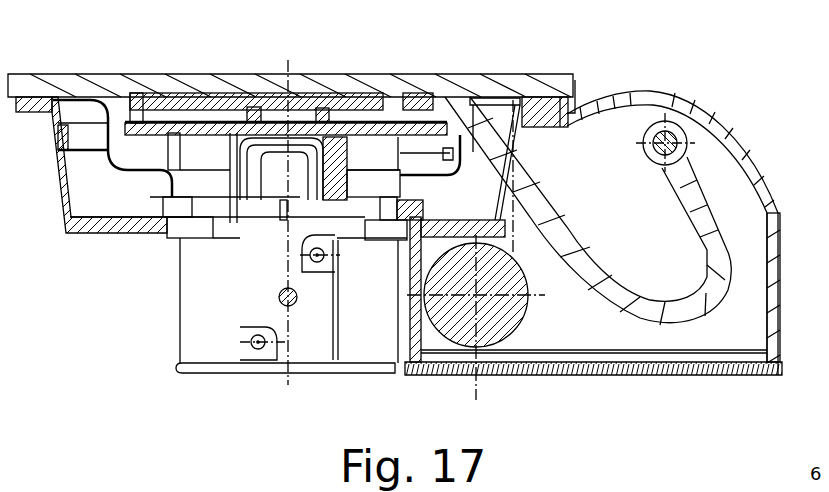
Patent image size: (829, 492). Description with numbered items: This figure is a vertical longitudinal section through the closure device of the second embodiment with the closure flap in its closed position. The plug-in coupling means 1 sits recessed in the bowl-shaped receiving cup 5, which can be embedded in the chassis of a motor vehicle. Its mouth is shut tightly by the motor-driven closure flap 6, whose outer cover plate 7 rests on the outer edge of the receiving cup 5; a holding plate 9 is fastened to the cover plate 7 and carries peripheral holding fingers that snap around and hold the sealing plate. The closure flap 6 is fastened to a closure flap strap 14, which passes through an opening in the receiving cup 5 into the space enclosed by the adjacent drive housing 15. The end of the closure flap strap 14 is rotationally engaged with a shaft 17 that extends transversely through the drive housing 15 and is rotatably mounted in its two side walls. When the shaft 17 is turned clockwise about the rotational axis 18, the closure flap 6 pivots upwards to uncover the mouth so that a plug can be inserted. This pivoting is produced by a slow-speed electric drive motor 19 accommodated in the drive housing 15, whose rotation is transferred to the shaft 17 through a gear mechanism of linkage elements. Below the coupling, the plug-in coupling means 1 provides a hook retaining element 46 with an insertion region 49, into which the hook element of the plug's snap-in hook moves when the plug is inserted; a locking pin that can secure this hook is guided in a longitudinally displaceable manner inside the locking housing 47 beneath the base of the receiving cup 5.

The plug-in coupling means 1 is at (213, 158).
The receiving cup 5 is at (62, 177).
The closure flap 6 is at (291, 81).
The outer cover plate 7 is at (490, 81).
The holding plate 9 is at (350, 102).
The closure flap strap 14 is at (543, 220).
The drive housing 15 is at (730, 128).
The shaft 17 is at (660, 133).
The rotational axis 18 is at (673, 135).
The drive motor 19 is at (495, 323).
The hook retaining element 46 is at (252, 160).
The locking housing 47 is at (213, 318).
The insertion region 49 is at (280, 160).